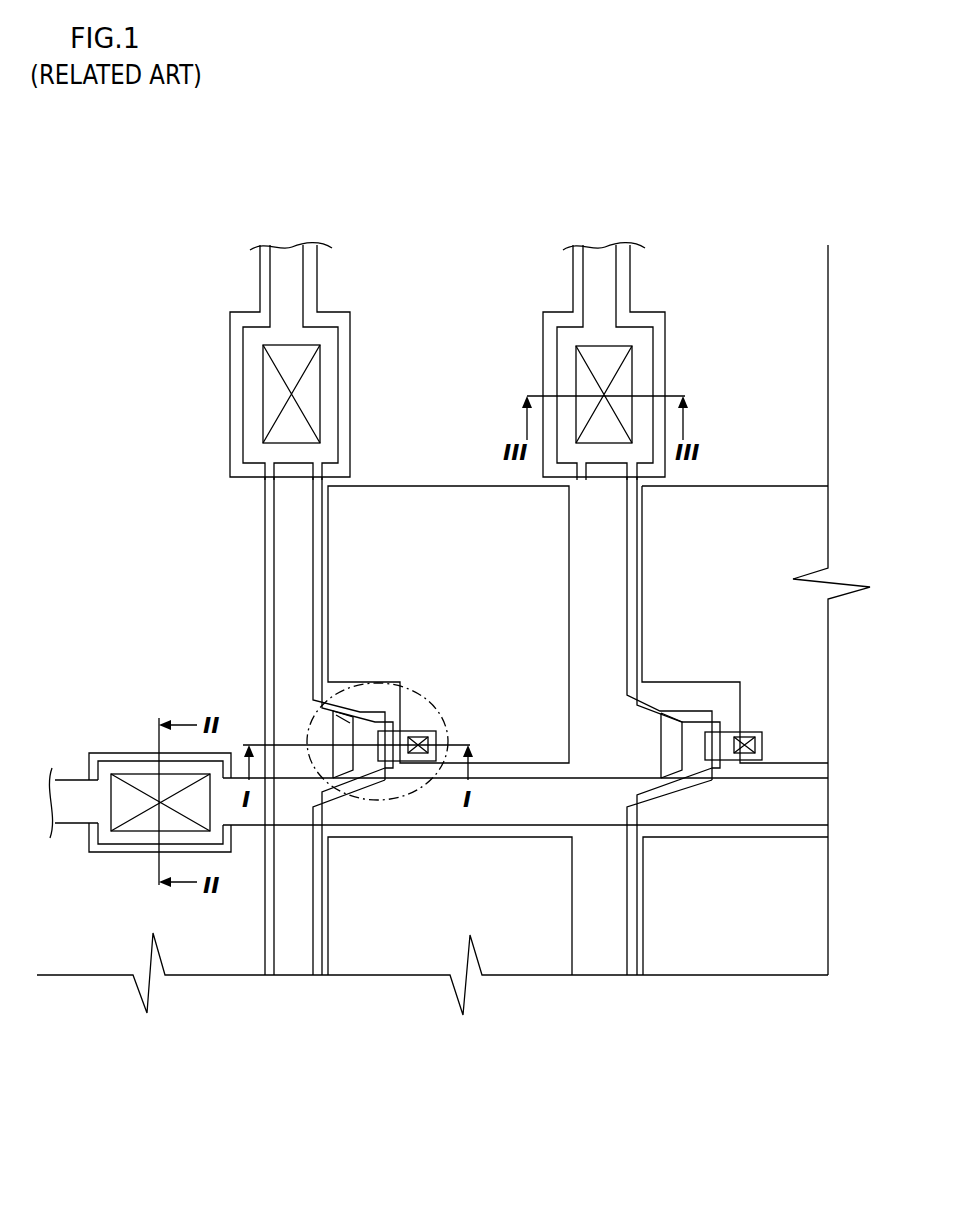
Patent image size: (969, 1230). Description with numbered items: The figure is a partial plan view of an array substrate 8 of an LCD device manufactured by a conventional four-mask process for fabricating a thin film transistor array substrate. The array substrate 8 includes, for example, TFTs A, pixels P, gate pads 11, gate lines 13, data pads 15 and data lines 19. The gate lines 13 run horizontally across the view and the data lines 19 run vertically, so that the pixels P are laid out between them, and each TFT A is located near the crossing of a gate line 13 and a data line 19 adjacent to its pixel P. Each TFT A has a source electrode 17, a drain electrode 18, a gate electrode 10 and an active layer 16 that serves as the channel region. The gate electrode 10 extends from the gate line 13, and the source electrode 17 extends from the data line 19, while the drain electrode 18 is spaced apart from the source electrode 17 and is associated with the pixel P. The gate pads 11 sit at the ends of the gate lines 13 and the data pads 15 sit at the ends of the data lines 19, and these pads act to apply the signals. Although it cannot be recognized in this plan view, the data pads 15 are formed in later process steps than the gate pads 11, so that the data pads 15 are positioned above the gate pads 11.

The array substrate 8 is at (98, 516).
The gate electrode 10 is at (373, 716).
The gate pad 11 is at (127, 757).
The gate line 13 is at (512, 776).
The data pad 15 is at (238, 403).
The active layer 16 is at (366, 758).
The source electrode 17 is at (345, 713).
The drain electrode 18 is at (442, 738).
The data line 19 is at (265, 616).
The pixel P is at (450, 481).
The TFT A is at (399, 800).